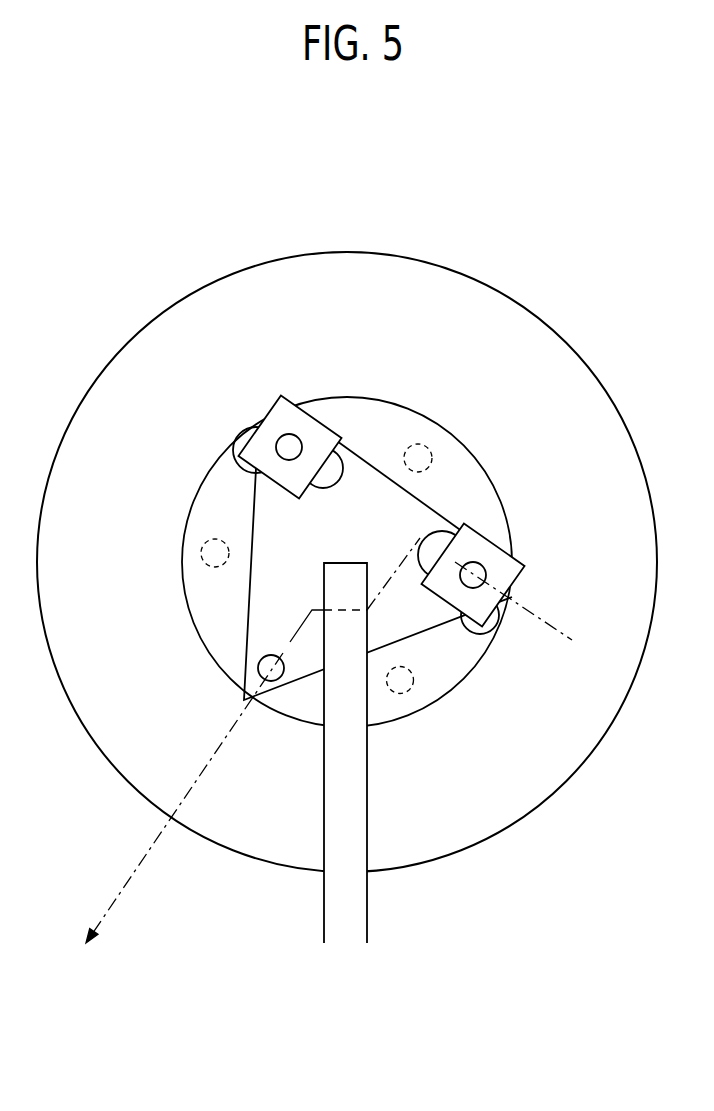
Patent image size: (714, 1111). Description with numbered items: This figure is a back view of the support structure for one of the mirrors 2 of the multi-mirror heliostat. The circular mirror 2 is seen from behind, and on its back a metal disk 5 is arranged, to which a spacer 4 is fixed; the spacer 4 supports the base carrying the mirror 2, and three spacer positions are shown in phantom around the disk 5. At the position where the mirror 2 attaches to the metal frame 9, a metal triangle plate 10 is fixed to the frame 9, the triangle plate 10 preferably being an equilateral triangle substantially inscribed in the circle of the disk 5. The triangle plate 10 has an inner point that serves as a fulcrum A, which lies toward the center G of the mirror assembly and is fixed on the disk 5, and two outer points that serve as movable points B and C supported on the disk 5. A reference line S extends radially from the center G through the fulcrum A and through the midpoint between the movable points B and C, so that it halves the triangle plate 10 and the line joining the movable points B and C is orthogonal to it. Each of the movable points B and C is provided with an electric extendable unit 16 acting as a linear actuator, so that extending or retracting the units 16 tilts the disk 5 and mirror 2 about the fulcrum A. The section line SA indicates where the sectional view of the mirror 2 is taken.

The mirror 2 is at (237, 272).
The disk 5 is at (400, 403).
The triangle plate 10 is at (253, 608).
The spacer 4 is at (195, 556).
The electric extendable unit 16 is at (322, 430).
The frame 9 is at (368, 838).
The fulcrum A is at (275, 682).
The movable point B is at (483, 630).
The movable point C is at (238, 457).
The line SA- SA is at (222, 726).
The reference line S is at (142, 858).
The center G is at (79, 955).